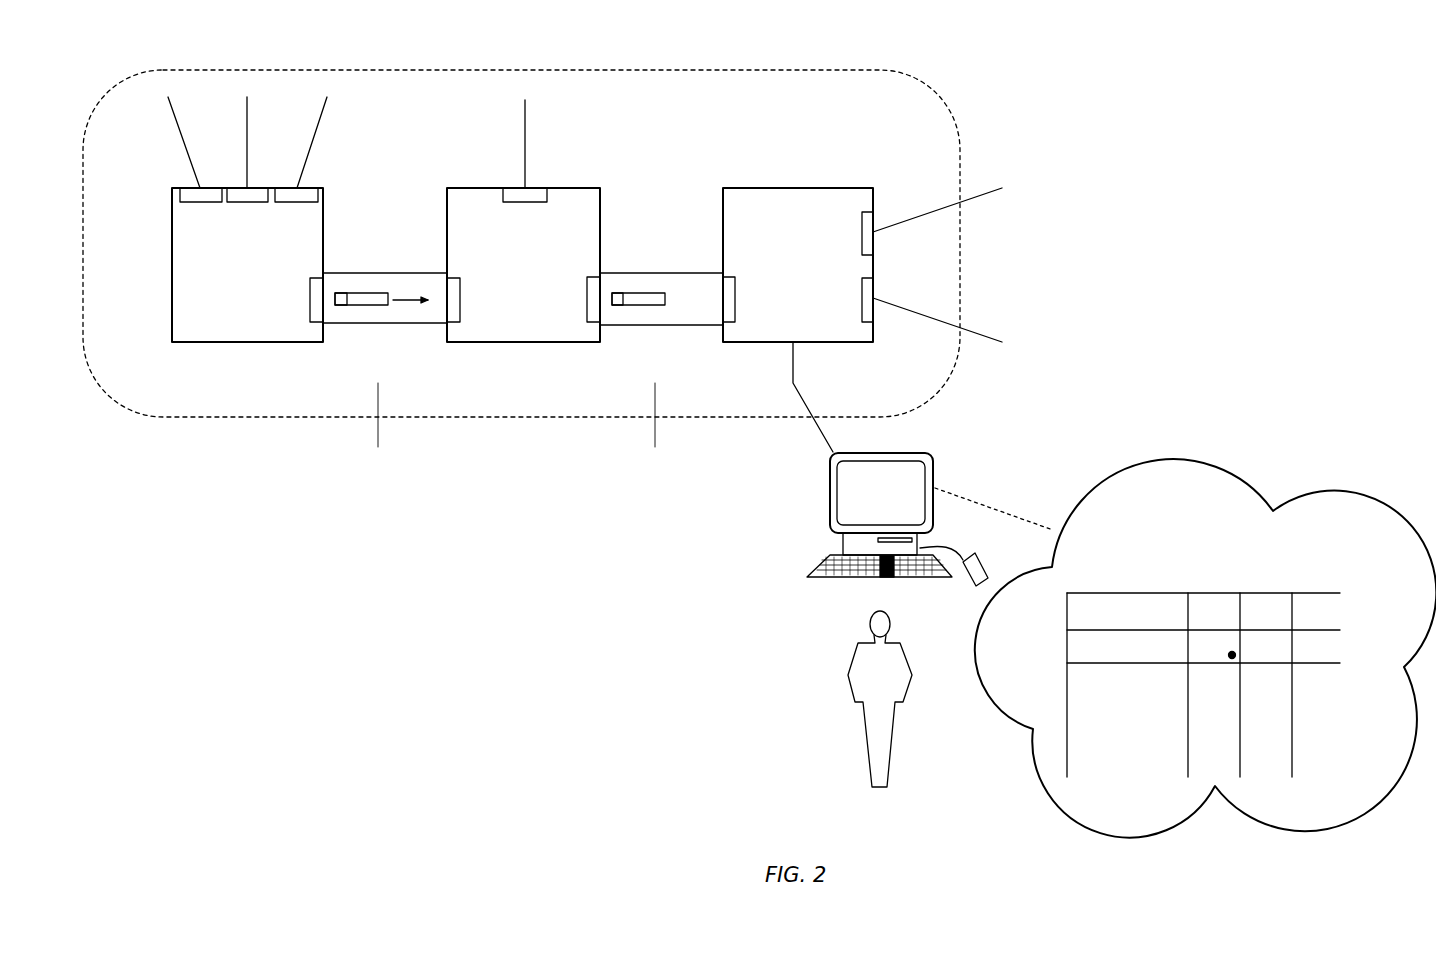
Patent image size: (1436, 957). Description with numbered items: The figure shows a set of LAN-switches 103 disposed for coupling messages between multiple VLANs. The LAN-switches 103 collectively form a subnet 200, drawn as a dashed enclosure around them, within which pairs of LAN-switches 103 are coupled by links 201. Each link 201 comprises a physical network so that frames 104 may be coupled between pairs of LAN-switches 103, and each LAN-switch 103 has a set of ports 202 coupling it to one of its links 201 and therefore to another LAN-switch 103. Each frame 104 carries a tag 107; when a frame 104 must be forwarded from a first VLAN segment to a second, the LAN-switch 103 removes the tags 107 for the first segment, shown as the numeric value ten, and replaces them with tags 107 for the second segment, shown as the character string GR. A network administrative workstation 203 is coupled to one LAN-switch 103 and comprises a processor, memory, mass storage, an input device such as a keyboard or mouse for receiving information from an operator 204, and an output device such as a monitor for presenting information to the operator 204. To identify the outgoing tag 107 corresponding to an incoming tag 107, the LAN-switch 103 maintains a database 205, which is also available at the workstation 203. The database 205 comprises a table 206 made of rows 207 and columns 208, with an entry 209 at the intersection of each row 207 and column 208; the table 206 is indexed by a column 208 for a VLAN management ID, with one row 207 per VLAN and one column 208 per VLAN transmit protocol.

The subnet 200 is at (817, 70).
The LAN-switch 103 is at (217, 331).
The port 202 is at (198, 203).
The link 201 is at (417, 323).
The frame 104 is at (653, 258).
The tag 107 is at (340, 307).
The network administrative workstation 203 is at (920, 453).
The operator 204 is at (860, 712).
The database 205 is at (1175, 455).
The table 206 is at (1243, 580).
The row 207 is at (1347, 593).
The column 208 is at (1238, 593).
The entry 209 is at (1234, 658).